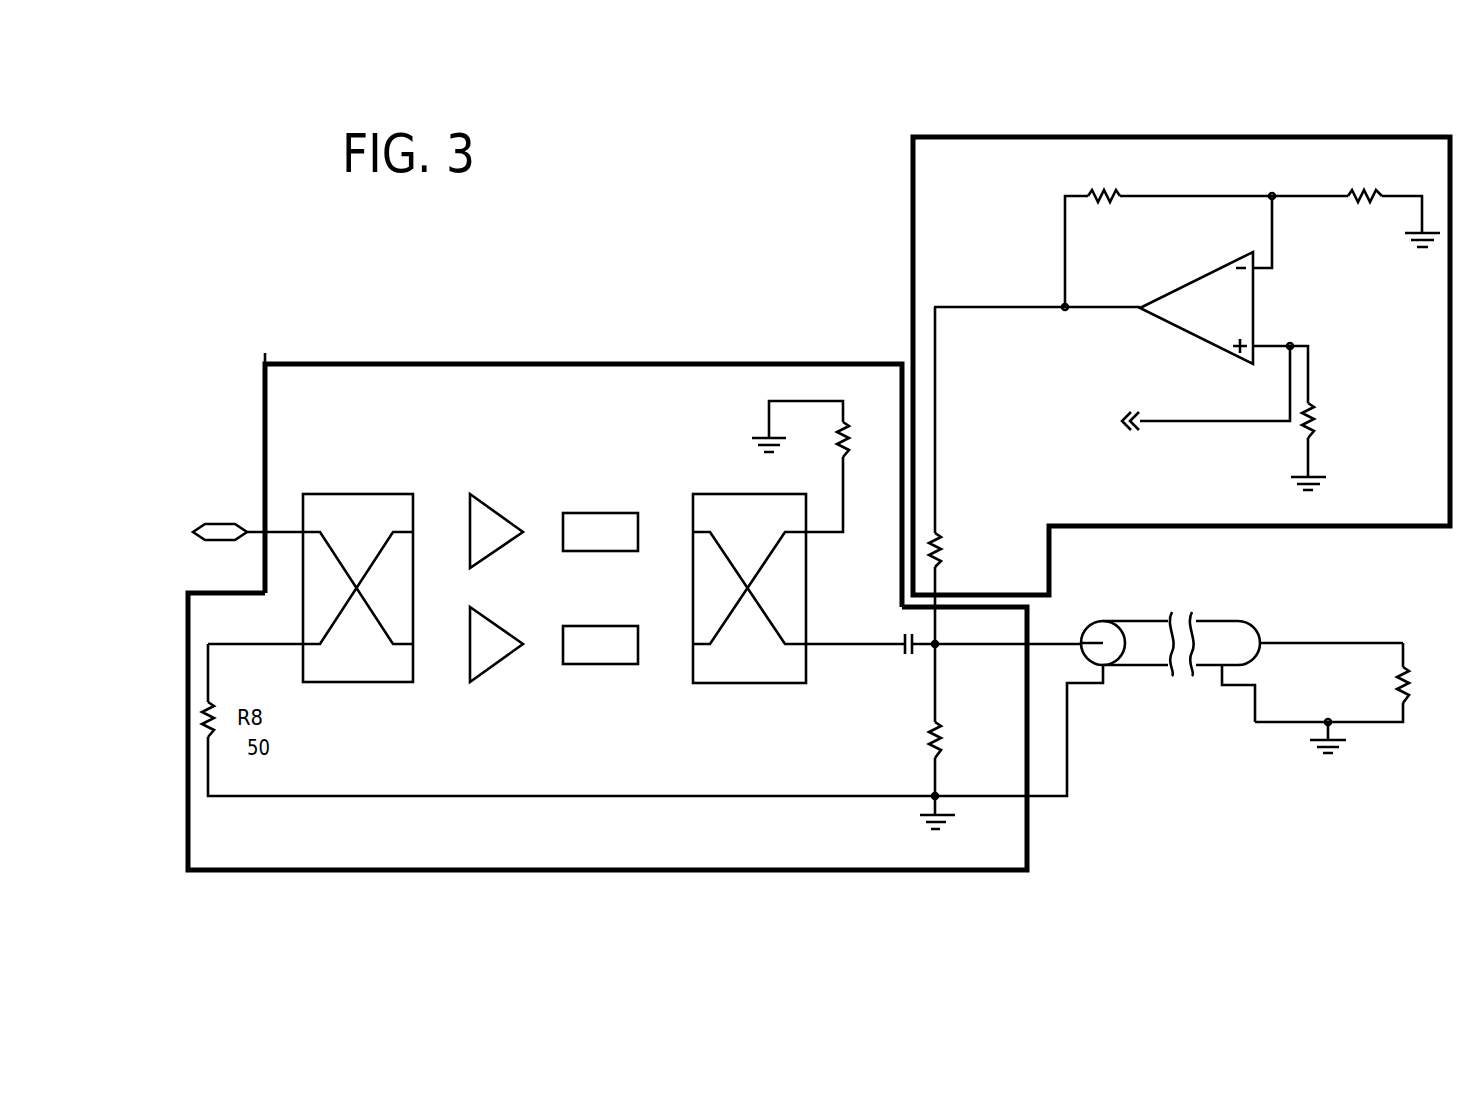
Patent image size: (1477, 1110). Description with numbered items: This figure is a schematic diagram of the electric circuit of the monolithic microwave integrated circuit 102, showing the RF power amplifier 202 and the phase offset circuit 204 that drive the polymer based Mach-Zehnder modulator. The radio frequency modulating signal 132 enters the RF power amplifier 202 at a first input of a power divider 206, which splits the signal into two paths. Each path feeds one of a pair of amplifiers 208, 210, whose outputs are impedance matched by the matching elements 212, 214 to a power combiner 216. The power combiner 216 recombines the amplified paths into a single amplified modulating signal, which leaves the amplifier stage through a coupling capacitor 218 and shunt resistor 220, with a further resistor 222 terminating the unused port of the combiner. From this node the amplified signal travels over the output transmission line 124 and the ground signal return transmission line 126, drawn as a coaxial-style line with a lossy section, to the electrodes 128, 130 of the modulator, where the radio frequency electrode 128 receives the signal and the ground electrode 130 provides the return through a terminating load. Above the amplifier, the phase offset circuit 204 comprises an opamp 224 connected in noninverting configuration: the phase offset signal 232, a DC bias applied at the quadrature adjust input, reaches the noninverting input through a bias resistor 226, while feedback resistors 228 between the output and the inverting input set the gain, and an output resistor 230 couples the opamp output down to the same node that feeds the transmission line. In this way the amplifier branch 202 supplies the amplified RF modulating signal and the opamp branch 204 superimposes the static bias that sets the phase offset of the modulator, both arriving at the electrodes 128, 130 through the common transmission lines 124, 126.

The monolithic microwave integrated circuit 102 is at (664, 281).
The RF power amplifier 202 is at (397, 363).
The phase offset circuit 204 is at (913, 192).
The radio frequency modulating signal 132 is at (188, 516).
The power divider 206 is at (345, 675).
The amplifiers 208 is at (472, 510).
The lower amplifier 210 is at (495, 657).
The impedance matching 212 is at (610, 513).
The impedance matching 214 is at (592, 665).
The power combiner 216 is at (718, 502).
The capacitor C1 218 is at (900, 655).
The resistor R3 220 is at (930, 745).
The termination resistor R7 222 is at (843, 425).
The opamp 224 is at (1232, 295).
The resistor R6 226 is at (1315, 410).
The feedback resistors R4, R5 228 is at (1340, 196).
The resistor R2 230 is at (935, 540).
The phase offset signal 232 is at (1180, 420).
The output transmission line 124 is at (1242, 661).
The ground signal return transmission line 126 is at (1296, 667).
The radio frequency electrode 128 is at (1365, 686).
The ground electrode 130 is at (1331, 748).